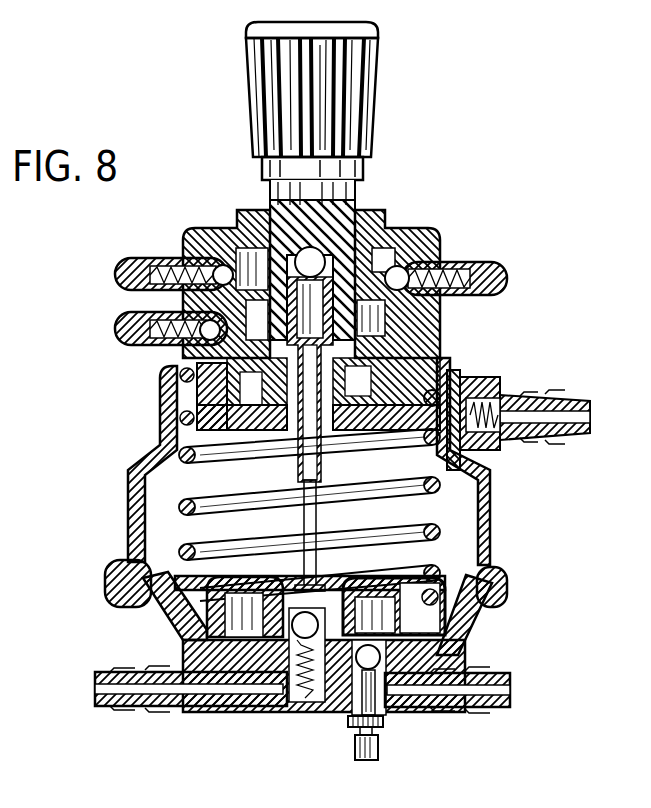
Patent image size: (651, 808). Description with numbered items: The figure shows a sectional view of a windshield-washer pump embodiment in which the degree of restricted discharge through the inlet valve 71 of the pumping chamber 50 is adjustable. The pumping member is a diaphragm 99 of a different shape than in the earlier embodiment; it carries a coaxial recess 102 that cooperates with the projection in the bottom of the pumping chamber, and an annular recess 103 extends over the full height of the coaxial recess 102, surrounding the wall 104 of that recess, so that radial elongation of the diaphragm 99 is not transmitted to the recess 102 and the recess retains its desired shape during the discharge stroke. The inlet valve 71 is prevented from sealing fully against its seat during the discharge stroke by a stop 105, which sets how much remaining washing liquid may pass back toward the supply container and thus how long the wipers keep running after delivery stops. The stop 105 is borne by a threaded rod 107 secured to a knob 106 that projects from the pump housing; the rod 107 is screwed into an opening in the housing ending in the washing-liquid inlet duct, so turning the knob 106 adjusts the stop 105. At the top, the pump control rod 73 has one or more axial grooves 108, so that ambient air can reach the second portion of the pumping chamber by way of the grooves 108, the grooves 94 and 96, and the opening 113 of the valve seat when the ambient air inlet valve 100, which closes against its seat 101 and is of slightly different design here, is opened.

The pump control rod 73 is at (338, 192).
The axial grooves 108 is at (272, 230).
The ambient air inlet valve 100 is at (372, 301).
The valve seat 101 is at (197, 395).
The groove 94 is at (160, 407).
The valve seat opening 113 is at (323, 418).
The groove 96 is at (380, 410).
The coaxial recess 102 is at (362, 578).
The diaphragm 99 is at (147, 612).
The first portion of the pumping chamber 50 is at (453, 603).
The inlet valve 71 is at (390, 661).
The annular recess 103 is at (233, 683).
The wall of the recess 104 is at (268, 695).
The threaded rod 107 is at (350, 708).
The stop 105 is at (433, 712).
The knob 106 is at (380, 742).